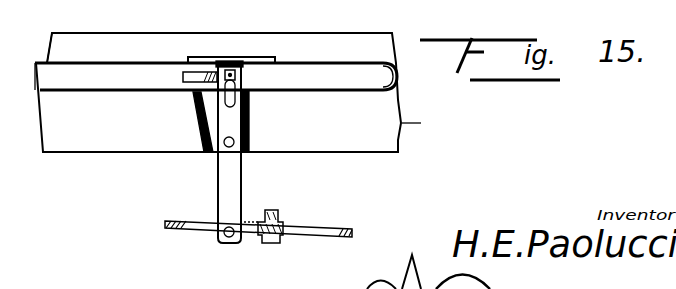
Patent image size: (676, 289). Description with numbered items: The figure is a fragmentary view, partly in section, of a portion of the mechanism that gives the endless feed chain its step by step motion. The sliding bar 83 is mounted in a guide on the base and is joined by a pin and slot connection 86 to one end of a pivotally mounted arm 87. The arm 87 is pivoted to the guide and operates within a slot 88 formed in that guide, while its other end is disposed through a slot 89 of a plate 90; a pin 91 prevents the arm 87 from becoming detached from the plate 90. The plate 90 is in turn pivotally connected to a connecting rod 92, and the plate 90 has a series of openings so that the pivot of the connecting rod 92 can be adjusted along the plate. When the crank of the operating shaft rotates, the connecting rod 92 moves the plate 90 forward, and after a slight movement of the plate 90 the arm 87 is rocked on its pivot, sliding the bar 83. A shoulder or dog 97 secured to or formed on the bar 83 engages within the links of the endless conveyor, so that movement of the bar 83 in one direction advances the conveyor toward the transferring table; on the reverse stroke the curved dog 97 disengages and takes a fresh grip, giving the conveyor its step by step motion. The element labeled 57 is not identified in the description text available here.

The guide rail body 57 is at (245, 92).
The bar 83 is at (136, 70).
The pin and slot connection 86 is at (242, 63).
The pivotally mounted arm 87 is at (242, 181).
The slot 88 is at (266, 152).
The slot 89 is at (192, 229).
The plate 90 is at (177, 229).
The pin 91 is at (228, 245).
The connecting rod 92 is at (352, 228).
The shoulder or dog 97 is at (200, 70).